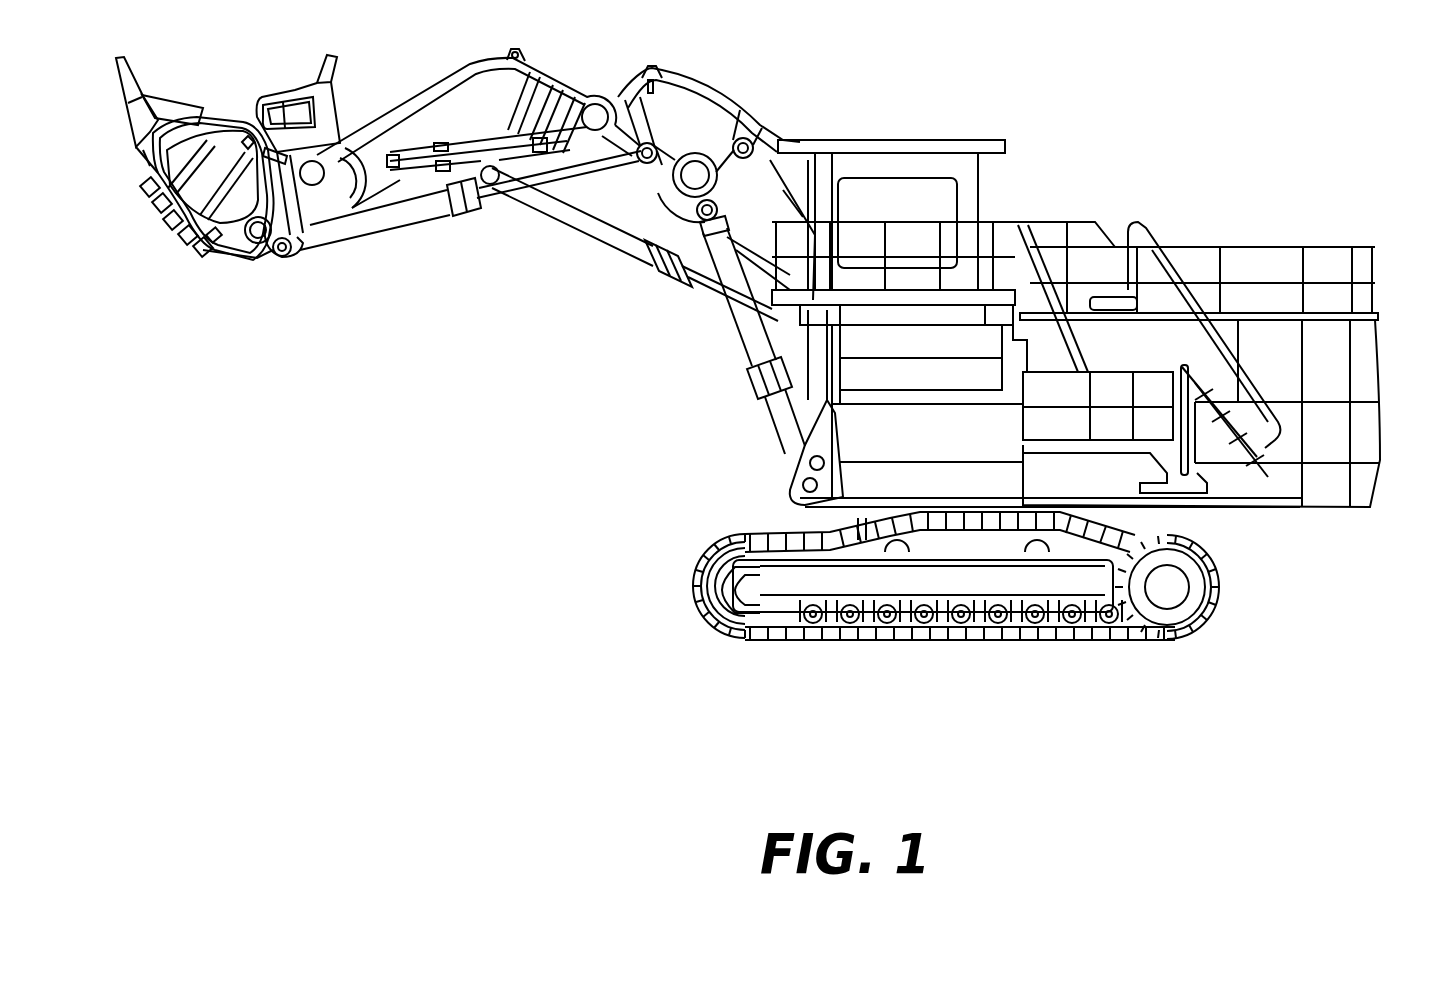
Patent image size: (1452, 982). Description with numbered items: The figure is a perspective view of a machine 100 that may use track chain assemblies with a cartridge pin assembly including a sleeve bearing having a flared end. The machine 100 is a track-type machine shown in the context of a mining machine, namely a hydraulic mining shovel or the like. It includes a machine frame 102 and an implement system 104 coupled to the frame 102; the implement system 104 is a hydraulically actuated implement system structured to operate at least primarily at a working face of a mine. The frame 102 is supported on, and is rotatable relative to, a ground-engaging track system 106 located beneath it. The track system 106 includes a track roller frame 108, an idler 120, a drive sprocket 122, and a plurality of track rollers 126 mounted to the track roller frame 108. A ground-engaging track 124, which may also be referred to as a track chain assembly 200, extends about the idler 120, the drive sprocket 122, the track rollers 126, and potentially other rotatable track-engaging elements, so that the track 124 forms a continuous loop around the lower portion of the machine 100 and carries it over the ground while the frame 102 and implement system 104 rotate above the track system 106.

The machine 100 is at (1283, 162).
The machine frame 102 is at (1374, 500).
The implement system 104 is at (256, 268).
The ground-engaging track system 106 is at (692, 540).
The track roller frame 108 is at (762, 583).
The idler 120 is at (718, 617).
The drive sprocket 122 is at (1180, 592).
The ground-engaging track 124 is at (860, 643).
The track rollers 126 is at (938, 640).
The track chain assembly 200 is at (702, 572).